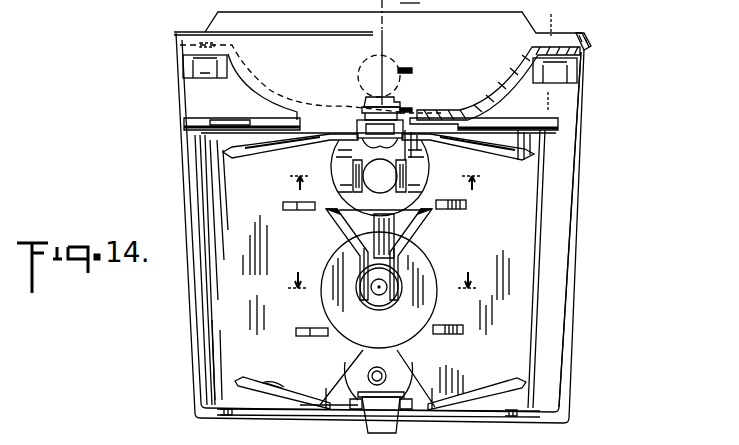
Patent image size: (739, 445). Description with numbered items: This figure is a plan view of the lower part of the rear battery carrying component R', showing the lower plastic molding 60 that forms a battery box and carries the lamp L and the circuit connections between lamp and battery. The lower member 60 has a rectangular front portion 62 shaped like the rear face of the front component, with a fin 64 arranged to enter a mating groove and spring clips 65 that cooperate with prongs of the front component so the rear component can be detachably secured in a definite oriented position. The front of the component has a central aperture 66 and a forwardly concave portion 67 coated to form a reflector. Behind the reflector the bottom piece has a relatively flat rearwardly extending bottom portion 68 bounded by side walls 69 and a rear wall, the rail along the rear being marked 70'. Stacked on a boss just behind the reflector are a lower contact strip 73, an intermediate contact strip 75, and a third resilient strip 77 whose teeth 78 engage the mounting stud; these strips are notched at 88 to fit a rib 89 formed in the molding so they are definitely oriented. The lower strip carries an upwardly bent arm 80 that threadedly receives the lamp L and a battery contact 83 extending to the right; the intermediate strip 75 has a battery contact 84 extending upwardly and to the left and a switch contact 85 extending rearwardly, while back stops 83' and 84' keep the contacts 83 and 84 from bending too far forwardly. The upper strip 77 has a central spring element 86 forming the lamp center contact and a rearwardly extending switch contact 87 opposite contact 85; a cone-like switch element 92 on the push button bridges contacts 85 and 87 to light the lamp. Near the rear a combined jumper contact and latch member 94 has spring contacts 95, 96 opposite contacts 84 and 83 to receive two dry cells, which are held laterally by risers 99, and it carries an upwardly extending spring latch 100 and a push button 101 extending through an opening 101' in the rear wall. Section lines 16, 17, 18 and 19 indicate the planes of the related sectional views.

The lower plastic molding 60 is at (578, 240).
The rectangular front portion 62 is at (592, 48).
The fin 64 is at (412, 4).
The spring clips 65 is at (185, 75).
The central aperture 66 is at (420, 116).
The forwardly concave portion 67 is at (280, 92).
The bottom portion 68 is at (500, 241).
The side walls 69 is at (187, 318).
The bottom rail 70' is at (378, 427).
The lower contact strip 73 is at (430, 157).
The intermediate contact strip 75 is at (345, 135).
The third contact resilient strip 77 is at (408, 180).
The teeth 78 is at (355, 178).
The upwardly bent arm 80 is at (403, 100).
The battery contact 83 is at (469, 162).
The back stop 83' is at (242, 111).
The battery contact 84 is at (364, 97).
The back stop 84' is at (484, 112).
The switch contact 85 is at (340, 264).
The spring element 86 is at (388, 150).
The switch contact 87 is at (405, 264).
The notches 88 is at (372, 214).
The rib 89 is at (390, 211).
The cone-like switch element 92 is at (378, 296).
The combined jumper contact and latch member 94 is at (415, 378).
The spring contact 95 is at (268, 382).
The spring contact 96 is at (495, 385).
The risers 99 is at (283, 211).
The spring latch 100 is at (348, 364).
The push button 101 is at (398, 406).
The opening 101' is at (327, 425).
The section line 16 is at (400, 25).
The section line 17 is at (383, 291).
The section line 18 is at (388, 170).
The section line 19 is at (556, 106).
The lamp L is at (398, 62).
The rear component R' is at (590, 229).